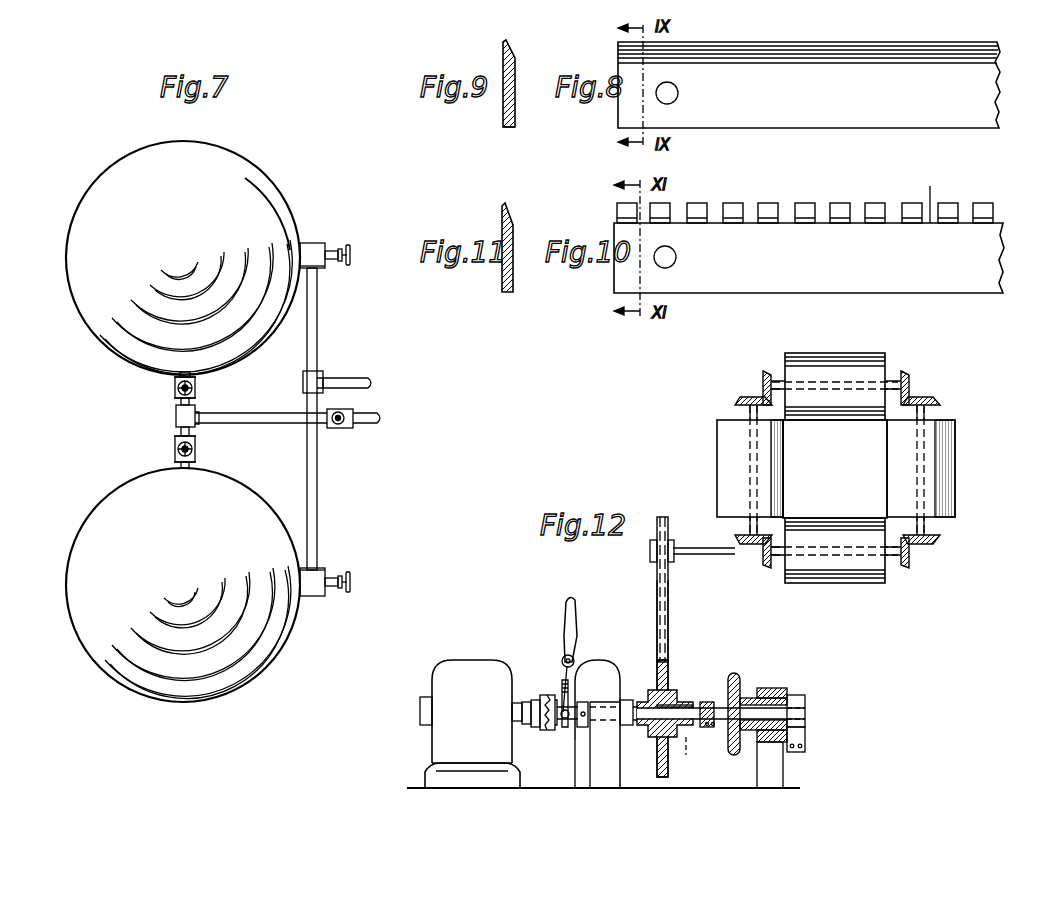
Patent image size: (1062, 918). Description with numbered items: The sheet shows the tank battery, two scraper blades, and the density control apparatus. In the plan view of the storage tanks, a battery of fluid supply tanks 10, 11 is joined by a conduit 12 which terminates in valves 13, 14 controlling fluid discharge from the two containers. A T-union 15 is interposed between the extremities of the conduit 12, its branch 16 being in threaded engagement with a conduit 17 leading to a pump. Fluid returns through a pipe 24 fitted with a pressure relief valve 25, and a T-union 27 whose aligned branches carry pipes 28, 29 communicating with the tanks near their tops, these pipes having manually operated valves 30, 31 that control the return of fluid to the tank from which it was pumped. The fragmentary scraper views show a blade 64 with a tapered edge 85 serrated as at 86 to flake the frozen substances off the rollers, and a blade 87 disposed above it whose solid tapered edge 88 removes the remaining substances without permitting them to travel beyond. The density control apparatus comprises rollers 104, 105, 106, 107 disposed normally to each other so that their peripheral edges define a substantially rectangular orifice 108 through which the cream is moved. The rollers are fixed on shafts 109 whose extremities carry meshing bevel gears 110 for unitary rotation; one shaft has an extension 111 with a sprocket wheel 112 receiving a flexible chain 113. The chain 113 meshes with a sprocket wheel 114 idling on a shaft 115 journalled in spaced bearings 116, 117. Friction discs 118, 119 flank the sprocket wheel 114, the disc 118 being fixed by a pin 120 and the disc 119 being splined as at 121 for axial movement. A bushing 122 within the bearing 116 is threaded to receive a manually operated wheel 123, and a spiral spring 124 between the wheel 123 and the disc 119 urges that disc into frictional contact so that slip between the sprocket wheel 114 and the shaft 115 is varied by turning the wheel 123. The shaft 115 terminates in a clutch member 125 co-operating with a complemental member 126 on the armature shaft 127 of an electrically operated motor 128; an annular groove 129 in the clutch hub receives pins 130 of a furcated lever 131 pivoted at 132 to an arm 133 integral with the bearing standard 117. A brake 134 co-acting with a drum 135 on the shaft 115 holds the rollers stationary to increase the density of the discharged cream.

In FIG. 7, the fluid supply tank 10 is at (96, 526).
In FIG. 7, the fluid supply tank 11 is at (258, 176).
In FIG. 7, the conduit 12 is at (318, 320).
In FIG. 7, the valve 13 is at (318, 592).
In FIG. 7, the valve 14 is at (318, 245).
In FIG. 7, the T-union 15 is at (320, 373).
In FIG. 7, the branch 16 is at (333, 389).
In FIG. 7, the conduit 17 is at (364, 378).
In FIG. 7, the pipe 24 is at (373, 424).
In FIG. 7, the pressure relief valve 25 is at (334, 430).
In FIG. 7, the T-union 27 is at (177, 418).
In FIG. 7, the pipe 28 is at (180, 432).
In FIG. 7, the pipe 29 is at (193, 406).
In FIG. 7, the manually operated valve 30 is at (176, 448).
In FIG. 7, the manually operated valve 31 is at (176, 388).
In FIG. 10, the toothed bar 64 is at (988, 246).
In FIG. 10, the tapered edge 85 is at (980, 202).
In FIG. 10, the serrations 86 is at (893, 222).
In FIG. 9, the blade 87 is at (502, 112).
In FIG. 9, the solid tapered edge 88 is at (509, 40).
In FIG. 11, the solid tapered edge 88 is at (507, 247).
In FIG. 12, the roller 104 is at (857, 362).
In FIG. 12, the roller 105 is at (957, 473).
In FIG. 12, the roller 106 is at (872, 582).
In FIG. 12, the roller 107 is at (722, 440).
In FIG. 12, the rectangular orifice 108 is at (835, 469).
In FIG. 12, the shaft 109 is at (896, 383).
In FIG. 12, the bevel gear 110 is at (763, 378).
In FIG. 12, the extension 111 is at (704, 556).
In FIG. 12, the sprocket wheel 112 is at (662, 520).
In FIG. 12, the flexible chain 113 is at (669, 610).
In FIG. 12, the sprocket wheel 114 is at (676, 680).
In FIG. 12, the shaft 115 is at (775, 692).
In FIG. 12, the bearing 116 is at (783, 765).
In FIG. 12, the bearing standard 117 is at (598, 772).
In FIG. 12, the friction disc 118 is at (650, 690).
In FIG. 12, the friction disc 119 is at (677, 695).
In FIG. 12, the pin 120 is at (629, 700).
In FIG. 12, the spline 121 is at (686, 738).
In FIG. 12, the bushing 122 is at (757, 688).
In FIG. 12, the manually operated wheel 123 is at (735, 755).
In FIG. 12, the spiral spring 124 is at (712, 702).
In FIG. 12, the clutch member 125 is at (548, 731).
In FIG. 12, the complemental clutch member 126 is at (541, 728).
In FIG. 12, the armature shaft 127 is at (527, 702).
In FIG. 12, the electrically operated motor 128 is at (456, 672).
In FIG. 12, the annular groove 129 is at (570, 726).
In FIG. 12, the pin 130 is at (575, 712).
In FIG. 12, the furcated lever 131 is at (561, 700).
In FIG. 12, the pivot 132 is at (564, 648).
In FIG. 12, the arm 133 is at (580, 660).
In FIG. 12, the brake 134 is at (800, 697).
In FIG. 12, the drum 135 is at (806, 716).